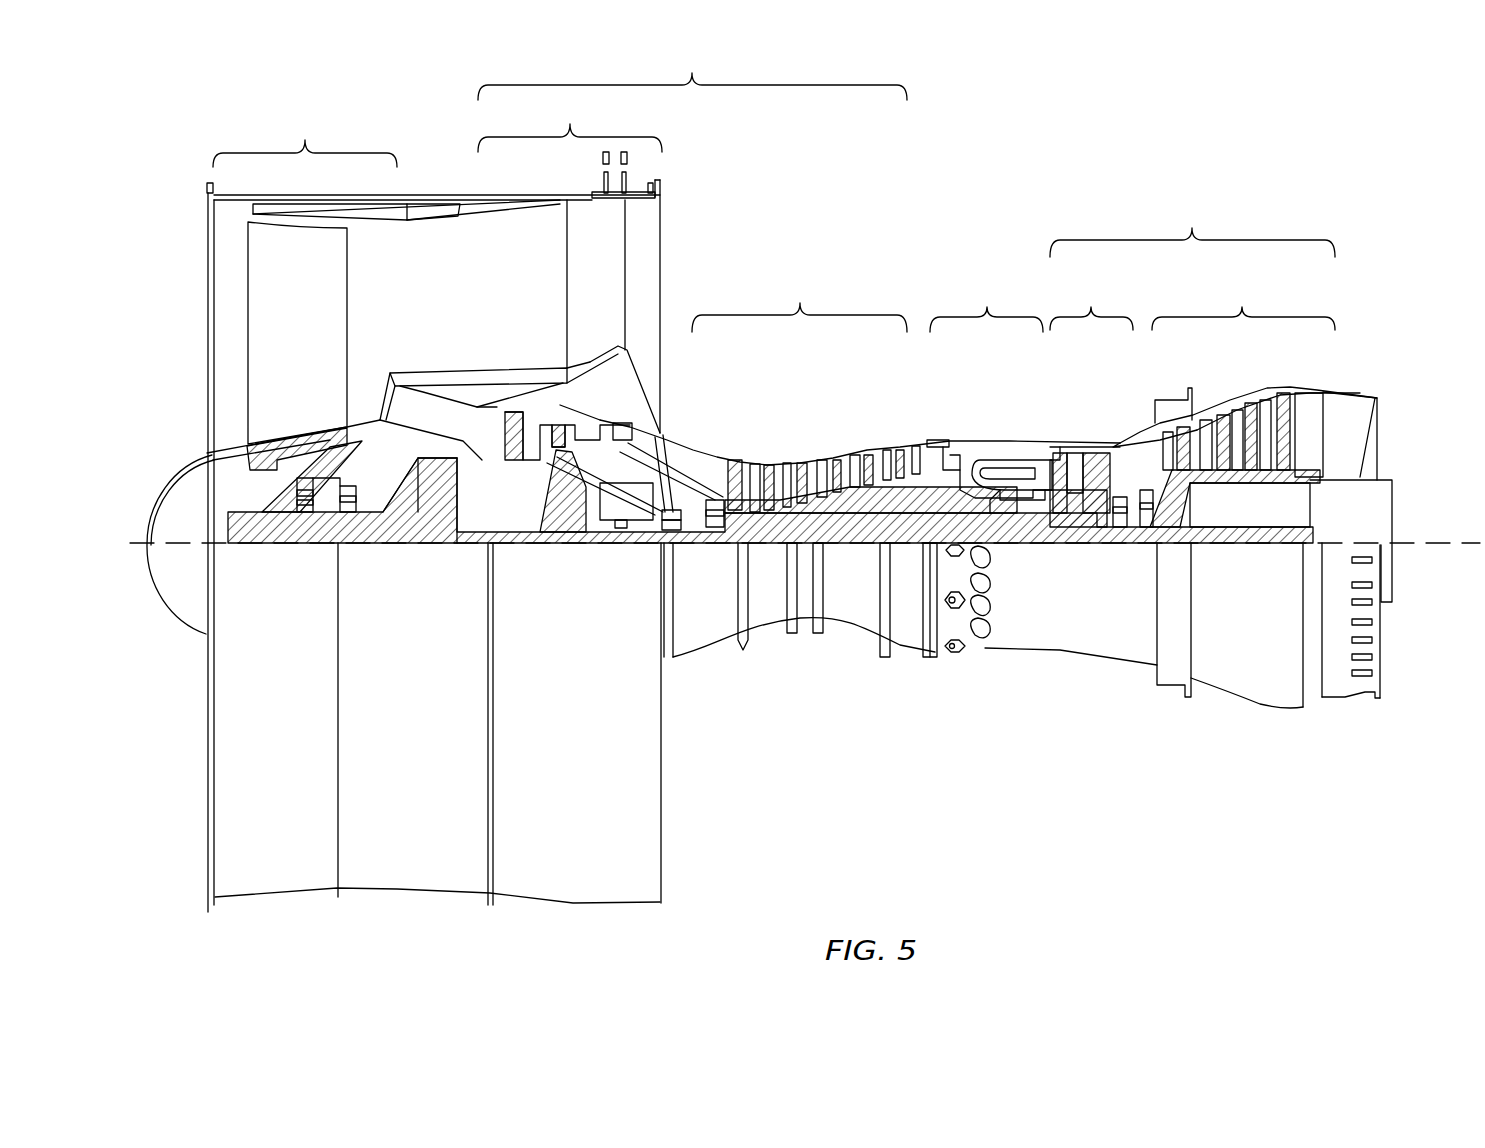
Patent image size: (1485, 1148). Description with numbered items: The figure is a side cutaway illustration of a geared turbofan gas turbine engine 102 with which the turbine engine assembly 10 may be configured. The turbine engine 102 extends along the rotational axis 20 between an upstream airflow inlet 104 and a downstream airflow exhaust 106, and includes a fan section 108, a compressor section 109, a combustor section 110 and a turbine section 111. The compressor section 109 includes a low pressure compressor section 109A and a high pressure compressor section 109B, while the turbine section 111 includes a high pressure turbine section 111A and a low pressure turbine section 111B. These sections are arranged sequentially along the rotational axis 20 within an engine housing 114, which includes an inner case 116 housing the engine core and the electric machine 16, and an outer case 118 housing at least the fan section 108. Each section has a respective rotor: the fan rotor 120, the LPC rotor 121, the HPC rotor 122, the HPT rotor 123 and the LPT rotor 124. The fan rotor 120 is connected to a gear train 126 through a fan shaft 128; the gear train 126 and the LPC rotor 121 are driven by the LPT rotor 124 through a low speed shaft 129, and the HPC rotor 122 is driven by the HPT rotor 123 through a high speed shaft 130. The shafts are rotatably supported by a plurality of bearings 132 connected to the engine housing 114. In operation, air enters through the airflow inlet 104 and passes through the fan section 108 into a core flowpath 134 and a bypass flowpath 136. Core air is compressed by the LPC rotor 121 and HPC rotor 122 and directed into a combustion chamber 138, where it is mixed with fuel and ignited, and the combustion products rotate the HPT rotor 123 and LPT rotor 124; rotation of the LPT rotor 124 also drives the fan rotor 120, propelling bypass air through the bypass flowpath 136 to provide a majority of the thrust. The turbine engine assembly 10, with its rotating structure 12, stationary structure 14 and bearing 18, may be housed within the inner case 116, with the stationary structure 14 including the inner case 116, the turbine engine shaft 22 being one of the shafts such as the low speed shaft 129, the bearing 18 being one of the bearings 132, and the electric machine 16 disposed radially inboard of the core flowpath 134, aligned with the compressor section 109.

The geared turbofan gas turbine engine 102 is at (176, 176).
The upstream airflow inlet 104 is at (205, 272).
The downstream airflow exhaust 106 is at (1383, 413).
The fan section 108 is at (305, 138).
The compressor section 109 is at (692, 71).
The low pressure compressor (LPC) section 109A is at (570, 122).
The high pressure compressor (HPC) section 109B is at (806, 393).
The combustor section 110 is at (993, 387).
The turbine section 111 is at (1192, 225).
The high pressure turbine (HPT) section 111A is at (1123, 361).
The low pressure turbine (LPT) section 111B is at (1248, 376).
The turbine engine assembly 10 is at (636, 466).
The rotating structure 12 is at (634, 549).
The stationary structure 14 is at (935, 639).
The inner case 116 is at (907, 657).
The electric machine 16 is at (616, 524).
The rotating structure bearing 18 is at (663, 540).
The rotational axis 20 is at (1445, 549).
The turbine engine shaft 22 is at (1230, 625).
The low speed shaft 129 is at (1237, 545).
The engine housing 114 is at (694, 680).
The outer case 118 is at (614, 905).
The fan rotor 120 is at (240, 455).
The LPC rotor 121 is at (562, 484).
The HPC rotor 122 is at (845, 500).
The HPT rotor 123 is at (1077, 517).
The LPT rotor 124 is at (1240, 482).
The gear train 126 is at (440, 535).
The fan shaft 128 is at (285, 540).
The high speed shaft 130 is at (1010, 537).
The bearings 132 is at (346, 513).
The core flowpath 134 is at (686, 457).
The bypass flowpath 136 is at (488, 307).
The combustion chamber 138 is at (997, 468).